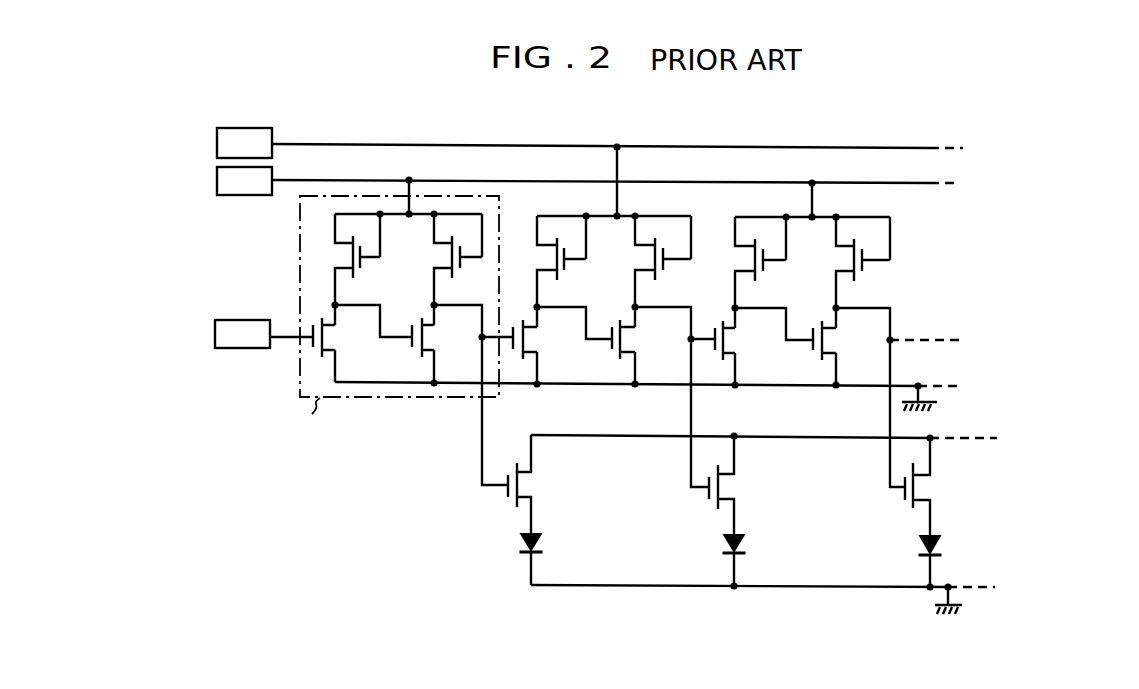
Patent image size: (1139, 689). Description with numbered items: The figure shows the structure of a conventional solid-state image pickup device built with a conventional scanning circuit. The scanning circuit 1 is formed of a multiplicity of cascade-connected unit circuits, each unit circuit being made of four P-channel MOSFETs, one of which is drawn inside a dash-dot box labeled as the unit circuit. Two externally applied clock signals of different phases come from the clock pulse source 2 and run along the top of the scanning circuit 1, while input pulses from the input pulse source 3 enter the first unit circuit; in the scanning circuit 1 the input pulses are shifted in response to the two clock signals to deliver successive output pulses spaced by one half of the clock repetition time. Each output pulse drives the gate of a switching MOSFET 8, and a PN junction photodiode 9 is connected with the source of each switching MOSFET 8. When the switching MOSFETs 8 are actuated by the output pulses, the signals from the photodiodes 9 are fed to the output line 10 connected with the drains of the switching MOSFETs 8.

The scanning circuit 1 is at (965, 150).
The clock pulse generator 2 is at (217, 176).
The input pulse source 3 is at (241, 348).
The switching MOSFET 8 is at (524, 486).
The PN junction photodiode 9 is at (517, 544).
The output line 10 is at (951, 438).